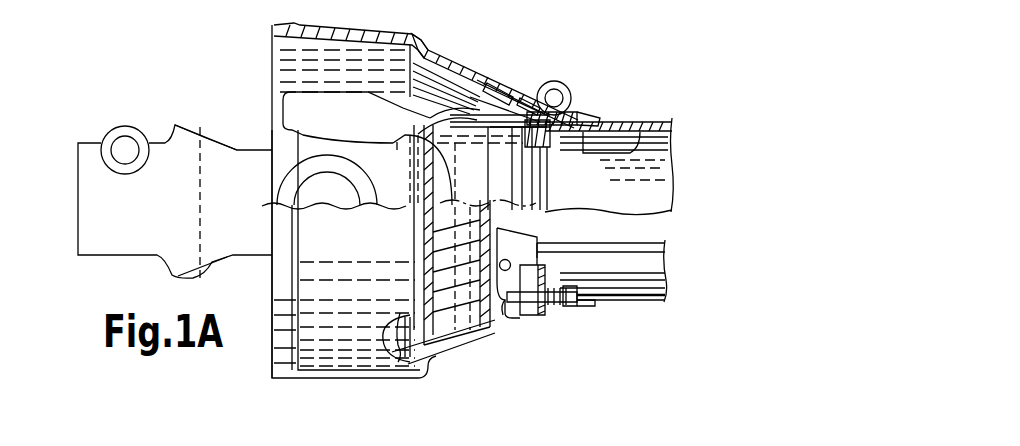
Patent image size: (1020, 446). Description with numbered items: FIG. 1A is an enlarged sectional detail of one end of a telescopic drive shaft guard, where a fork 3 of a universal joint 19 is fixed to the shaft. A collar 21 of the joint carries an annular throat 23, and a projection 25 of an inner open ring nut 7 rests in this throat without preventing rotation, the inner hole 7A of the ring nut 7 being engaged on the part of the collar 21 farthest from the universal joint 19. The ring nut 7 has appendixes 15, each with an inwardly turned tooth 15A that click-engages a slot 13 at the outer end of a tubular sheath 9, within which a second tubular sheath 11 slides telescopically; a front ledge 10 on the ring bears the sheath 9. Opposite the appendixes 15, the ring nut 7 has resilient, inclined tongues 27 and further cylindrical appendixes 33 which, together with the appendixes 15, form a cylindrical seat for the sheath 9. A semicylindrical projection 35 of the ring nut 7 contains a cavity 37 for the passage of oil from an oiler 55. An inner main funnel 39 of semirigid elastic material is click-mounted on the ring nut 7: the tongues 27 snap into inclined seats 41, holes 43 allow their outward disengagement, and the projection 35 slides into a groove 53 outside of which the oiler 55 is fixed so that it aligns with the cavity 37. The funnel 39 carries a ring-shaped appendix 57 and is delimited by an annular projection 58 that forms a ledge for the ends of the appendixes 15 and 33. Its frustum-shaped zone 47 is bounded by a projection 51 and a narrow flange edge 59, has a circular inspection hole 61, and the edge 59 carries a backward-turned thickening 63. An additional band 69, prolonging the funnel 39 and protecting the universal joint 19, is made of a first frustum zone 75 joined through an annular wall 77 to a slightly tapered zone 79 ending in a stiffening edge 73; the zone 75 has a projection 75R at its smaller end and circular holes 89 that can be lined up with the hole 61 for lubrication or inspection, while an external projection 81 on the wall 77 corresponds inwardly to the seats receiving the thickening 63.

The fork 3 is at (290, 110).
The inner open ring nut 7 is at (560, 150).
The inner hole of the ring nut 7A is at (540, 153).
The tubular sheath 9 is at (584, 134).
The front ledge 10 is at (543, 282).
The tubular sheath 11 is at (650, 158).
The slot 13 is at (573, 293).
The appendix 15 is at (550, 303).
The tooth 15A is at (570, 302).
The universal joint 19 is at (366, 176).
The collar 21 is at (537, 217).
The annular throat 23 is at (487, 190).
The projection of the inner ring nut 25 is at (490, 133).
The resilient tongue 27 is at (487, 100).
The cylindrical appendix 33 is at (593, 113).
The semicylindrical projection 35 is at (532, 317).
The cavity 37 is at (523, 310).
The inner main funnel 39 is at (471, 351).
The inclined seat 41 is at (503, 110).
The hole 43 is at (547, 113).
The frustum-shaped zone 47 is at (410, 317).
The projection 51 is at (513, 100).
The groove 53 is at (513, 313).
The oiler 55 is at (537, 340).
The ring-shaped appendix 57 is at (567, 83).
The annular projection 58 is at (637, 127).
The narrow flange edge 59 is at (408, 50).
The circular hole 61 is at (410, 98).
The thickening 63 is at (380, 342).
The additional band 69 is at (348, 386).
The stiffening edge 73 is at (273, 32).
The first frustum zone 75 is at (453, 340).
The projection 75R is at (498, 87).
The annular wall 77 is at (430, 45).
The frustum zone 79 is at (323, 33).
The external projection 81 is at (420, 378).
The circular hole 89 is at (440, 67).